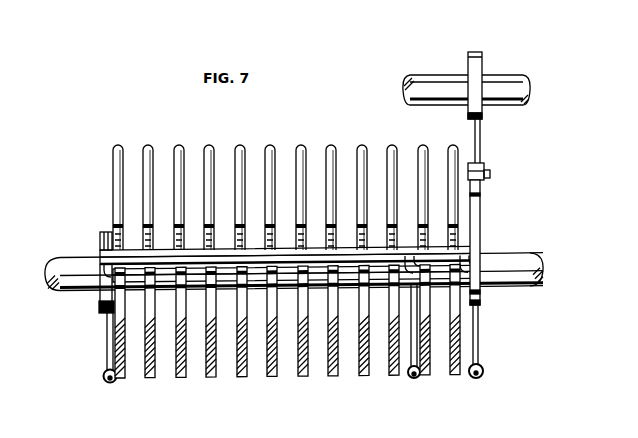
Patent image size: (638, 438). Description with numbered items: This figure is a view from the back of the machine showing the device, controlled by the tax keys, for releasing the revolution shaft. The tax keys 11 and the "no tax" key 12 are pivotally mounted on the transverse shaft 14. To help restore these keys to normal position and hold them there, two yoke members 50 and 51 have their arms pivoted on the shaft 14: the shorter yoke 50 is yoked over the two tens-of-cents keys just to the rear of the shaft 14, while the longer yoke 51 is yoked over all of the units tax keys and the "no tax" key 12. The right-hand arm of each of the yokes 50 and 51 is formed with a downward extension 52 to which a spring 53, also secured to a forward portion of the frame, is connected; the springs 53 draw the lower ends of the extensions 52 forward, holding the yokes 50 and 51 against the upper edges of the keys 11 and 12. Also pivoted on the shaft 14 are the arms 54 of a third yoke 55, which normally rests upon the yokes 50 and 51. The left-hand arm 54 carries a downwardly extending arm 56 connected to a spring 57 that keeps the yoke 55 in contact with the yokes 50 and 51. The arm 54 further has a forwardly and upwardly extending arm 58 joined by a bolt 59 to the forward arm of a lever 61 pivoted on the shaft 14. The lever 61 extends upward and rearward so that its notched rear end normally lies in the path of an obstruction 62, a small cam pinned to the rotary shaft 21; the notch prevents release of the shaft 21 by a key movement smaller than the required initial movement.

The tax keys 11 is at (275, 379).
The no tax key 12 is at (123, 382).
The transverse shaft 14 is at (528, 262).
The rotary shaft 21 is at (515, 82).
The yoke member 50 is at (448, 267).
The yoke member 51 is at (100, 255).
The downward extensions 52 is at (109, 341).
The springs 53 is at (104, 380).
The arms 54 is at (105, 308).
The third yoke 55 is at (137, 253).
The downwardly extending arm 56 is at (479, 350).
The spring 57 is at (484, 371).
The forwardly and upwardly extending arm 58 is at (476, 203).
The bolt 59 is at (490, 172).
The lever 61 is at (480, 148).
The obstruction 62 is at (480, 60).